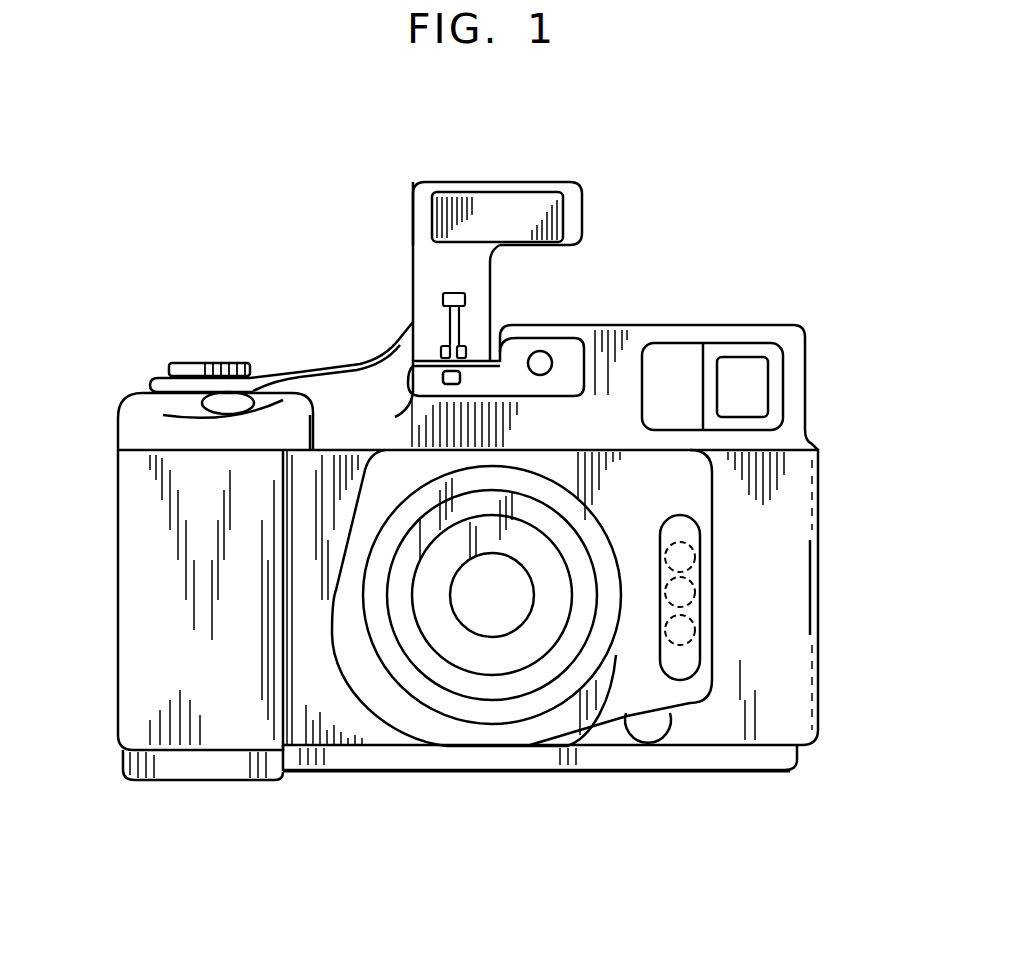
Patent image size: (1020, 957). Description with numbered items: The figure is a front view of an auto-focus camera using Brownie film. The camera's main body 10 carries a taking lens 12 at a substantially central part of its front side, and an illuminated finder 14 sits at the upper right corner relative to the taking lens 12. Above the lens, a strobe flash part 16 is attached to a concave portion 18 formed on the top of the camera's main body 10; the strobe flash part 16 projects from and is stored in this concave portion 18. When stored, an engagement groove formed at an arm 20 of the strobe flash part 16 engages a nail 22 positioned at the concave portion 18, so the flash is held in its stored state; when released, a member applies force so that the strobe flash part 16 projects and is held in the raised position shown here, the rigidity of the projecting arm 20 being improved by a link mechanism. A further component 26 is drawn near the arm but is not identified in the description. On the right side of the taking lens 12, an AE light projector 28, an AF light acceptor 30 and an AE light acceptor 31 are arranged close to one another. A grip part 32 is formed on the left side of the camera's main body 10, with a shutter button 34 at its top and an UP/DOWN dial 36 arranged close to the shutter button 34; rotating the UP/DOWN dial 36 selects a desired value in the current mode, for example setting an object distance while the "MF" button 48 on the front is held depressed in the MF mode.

The camera's main body 10 is at (815, 285).
The taking lens 12 is at (472, 623).
The illuminated finder 14 is at (752, 390).
The strobe flash part 16 is at (525, 197).
The concave portion 18 is at (553, 396).
The arm 20 is at (425, 265).
The nail 22 is at (408, 393).
The fastening bolt 26 is at (440, 314).
The AE light projector 28 is at (692, 555).
The AF light acceptor 30 is at (695, 637).
The AE light acceptor 31 is at (685, 592).
The grip part 32 is at (128, 648).
The shutter button 34 is at (237, 400).
The UP/DOWN dial 36 is at (200, 362).
The "MF" button 48 is at (652, 740).